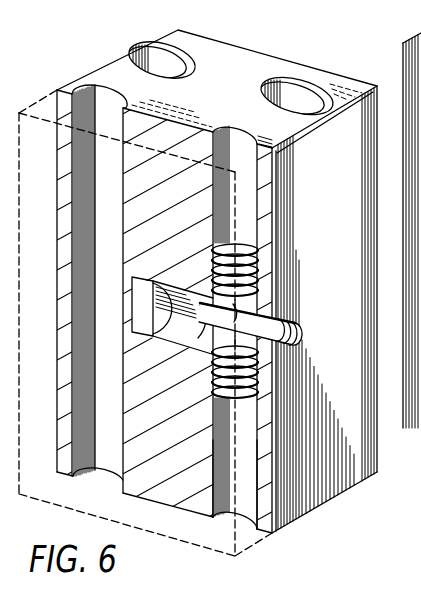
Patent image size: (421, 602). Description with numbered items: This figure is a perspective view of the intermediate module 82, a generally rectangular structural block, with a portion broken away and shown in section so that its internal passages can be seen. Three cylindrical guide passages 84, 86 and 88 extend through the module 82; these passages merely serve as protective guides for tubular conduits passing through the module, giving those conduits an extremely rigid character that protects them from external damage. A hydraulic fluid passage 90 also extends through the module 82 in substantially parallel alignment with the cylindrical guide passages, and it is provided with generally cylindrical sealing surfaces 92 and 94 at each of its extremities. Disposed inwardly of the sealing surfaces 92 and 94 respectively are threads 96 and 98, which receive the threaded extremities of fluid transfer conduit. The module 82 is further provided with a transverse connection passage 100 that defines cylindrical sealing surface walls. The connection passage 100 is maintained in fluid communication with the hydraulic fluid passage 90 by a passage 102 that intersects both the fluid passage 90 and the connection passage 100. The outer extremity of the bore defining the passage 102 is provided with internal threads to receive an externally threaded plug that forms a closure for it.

The intermediate module 82 is at (234, 94).
The cylindrical guide passage 84 is at (304, 92).
The cylindrical guide passage 86 is at (195, 54).
The cylindrical guide passage 88 is at (95, 98).
The hydraulic fluid passage 90 is at (242, 212).
The cylindrical sealing surface 92 is at (253, 433).
The cylindrical sealing surface 94 is at (257, 183).
The threads 96 is at (266, 365).
The threads 98 is at (252, 272).
The transverse connection passage 100 is at (172, 336).
The passage 102 is at (279, 300).